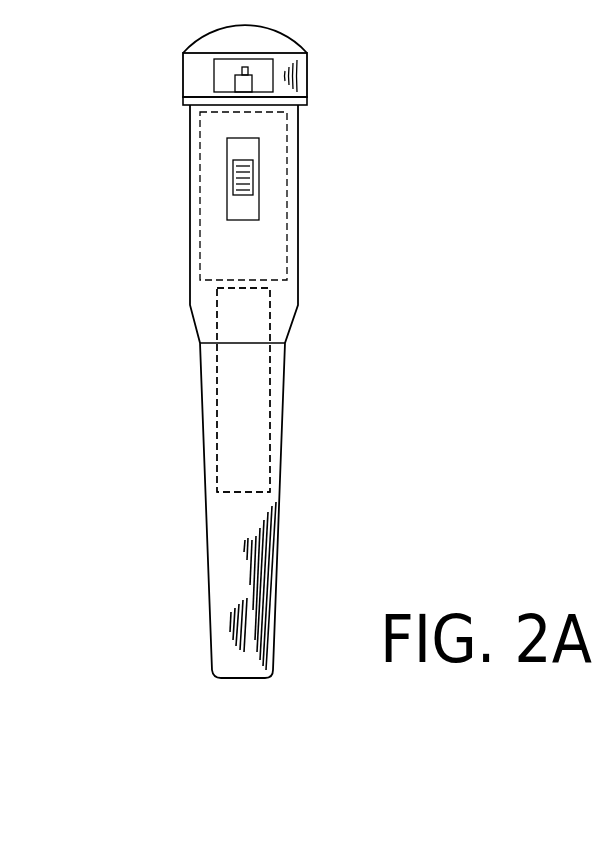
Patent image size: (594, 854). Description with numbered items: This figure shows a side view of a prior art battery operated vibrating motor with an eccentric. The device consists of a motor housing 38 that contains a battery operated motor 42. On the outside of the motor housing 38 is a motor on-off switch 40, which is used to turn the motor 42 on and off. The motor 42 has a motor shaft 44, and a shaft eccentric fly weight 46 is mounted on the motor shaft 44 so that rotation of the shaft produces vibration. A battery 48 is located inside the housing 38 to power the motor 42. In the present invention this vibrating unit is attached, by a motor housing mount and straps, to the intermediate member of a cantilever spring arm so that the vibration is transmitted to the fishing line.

The motor housing 38 is at (300, 312).
The motor on-off switch 40 is at (250, 152).
The battery operated motor 42 is at (268, 183).
The motor shaft 44 is at (244, 68).
The shaft eccentric fly weight 46 is at (222, 63).
The battery 48 is at (235, 402).